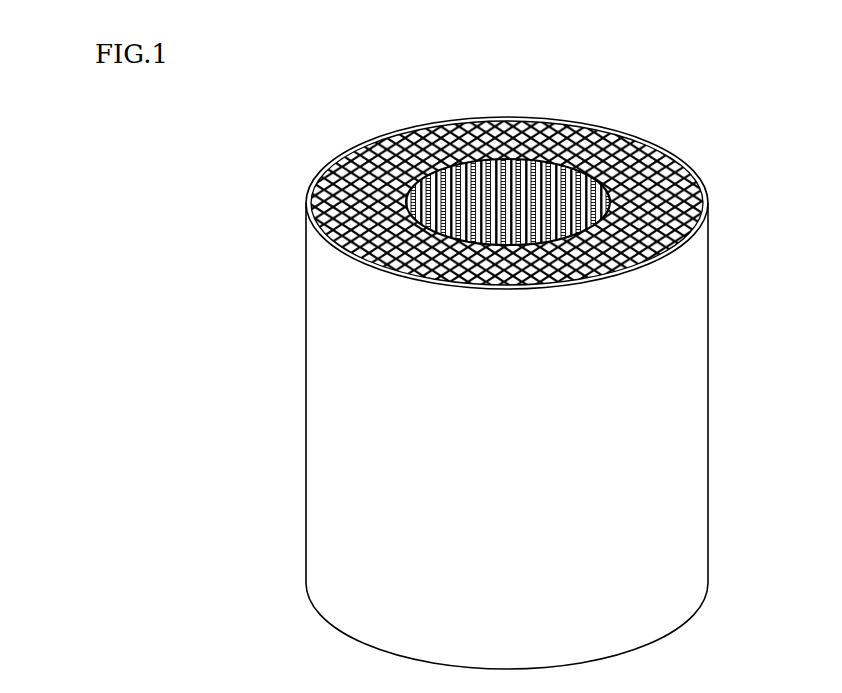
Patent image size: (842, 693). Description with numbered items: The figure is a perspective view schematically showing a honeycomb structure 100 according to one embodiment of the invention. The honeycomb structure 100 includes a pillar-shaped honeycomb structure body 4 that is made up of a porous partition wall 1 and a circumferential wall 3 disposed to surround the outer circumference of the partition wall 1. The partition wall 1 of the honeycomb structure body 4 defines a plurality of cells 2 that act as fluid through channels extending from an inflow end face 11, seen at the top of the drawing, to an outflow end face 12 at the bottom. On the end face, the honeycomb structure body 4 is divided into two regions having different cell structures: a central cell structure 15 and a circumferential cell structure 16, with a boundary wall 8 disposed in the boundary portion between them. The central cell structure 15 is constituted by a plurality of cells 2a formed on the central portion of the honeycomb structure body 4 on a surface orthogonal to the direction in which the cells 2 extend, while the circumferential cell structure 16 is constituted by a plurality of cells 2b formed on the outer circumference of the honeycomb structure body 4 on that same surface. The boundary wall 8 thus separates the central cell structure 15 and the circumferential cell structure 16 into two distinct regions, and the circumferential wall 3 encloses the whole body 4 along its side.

The honeycomb structure 100 is at (787, 39).
The partition wall 1 is at (550, 138).
The cells 2 is at (507, 167).
The cells 2a is at (598, 170).
The cells 2b is at (473, 138).
The circumferential wall 3 is at (688, 274).
The honeycomb structure body 4 is at (712, 385).
The boundary wall 8 is at (708, 185).
The inflow end face 11 is at (345, 143).
The outflow end face 12 is at (323, 620).
The central cell structure 15 is at (332, 168).
The circumferential cell structure 16 is at (325, 207).